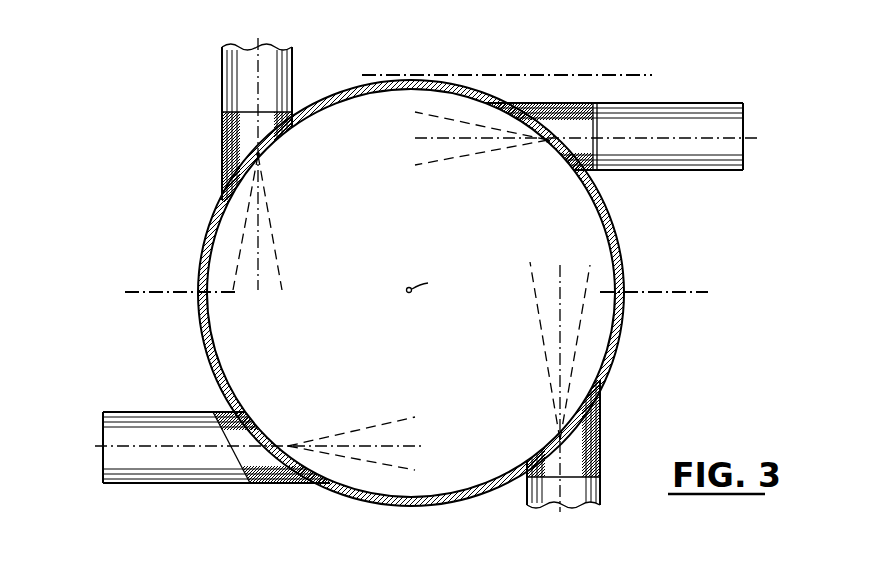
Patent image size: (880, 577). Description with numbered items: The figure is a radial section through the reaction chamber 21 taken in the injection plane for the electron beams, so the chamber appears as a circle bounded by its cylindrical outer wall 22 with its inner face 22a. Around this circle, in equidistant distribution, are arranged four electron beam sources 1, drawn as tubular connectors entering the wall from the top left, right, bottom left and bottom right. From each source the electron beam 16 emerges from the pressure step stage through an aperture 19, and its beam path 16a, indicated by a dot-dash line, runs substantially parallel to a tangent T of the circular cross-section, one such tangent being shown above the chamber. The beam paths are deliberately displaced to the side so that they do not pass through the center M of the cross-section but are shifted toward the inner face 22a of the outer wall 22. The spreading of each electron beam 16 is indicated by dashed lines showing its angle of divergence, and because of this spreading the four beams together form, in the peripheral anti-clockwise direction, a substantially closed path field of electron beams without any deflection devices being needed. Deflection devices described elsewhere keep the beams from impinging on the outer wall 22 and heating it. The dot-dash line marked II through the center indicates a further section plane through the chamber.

The electron beam source 1 is at (233, 79).
The electron beam 16 is at (241, 240).
The beam path 16a is at (254, 268).
The aperture 19 is at (264, 153).
The reaction chamber 21 is at (626, 319).
The cylindrical outer wall 22 is at (617, 233).
The inner face 22a is at (212, 357).
The center M is at (429, 274).
The tangent T is at (625, 73).
The section line II is at (416, 294).